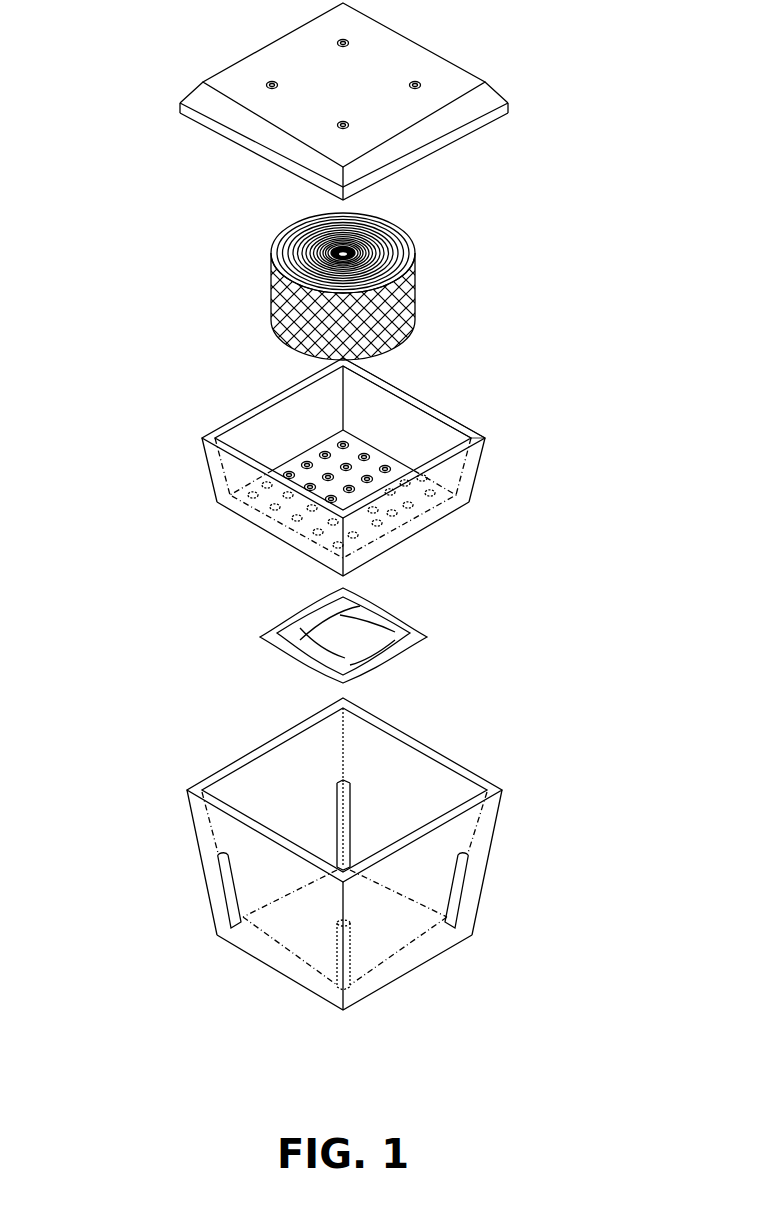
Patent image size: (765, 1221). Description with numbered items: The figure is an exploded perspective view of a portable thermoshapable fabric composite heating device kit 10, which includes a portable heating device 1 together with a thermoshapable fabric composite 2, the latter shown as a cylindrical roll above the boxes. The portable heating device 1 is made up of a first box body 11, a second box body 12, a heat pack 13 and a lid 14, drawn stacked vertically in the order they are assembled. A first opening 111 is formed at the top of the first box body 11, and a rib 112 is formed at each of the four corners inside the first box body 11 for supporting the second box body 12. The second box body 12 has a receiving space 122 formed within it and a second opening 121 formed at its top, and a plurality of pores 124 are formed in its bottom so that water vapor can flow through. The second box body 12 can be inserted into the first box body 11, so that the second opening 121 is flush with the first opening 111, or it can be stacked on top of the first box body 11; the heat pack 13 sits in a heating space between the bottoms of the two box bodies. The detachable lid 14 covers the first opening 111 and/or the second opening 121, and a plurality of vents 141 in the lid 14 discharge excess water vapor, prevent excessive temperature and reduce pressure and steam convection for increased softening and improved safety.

The portable thermoshapable fabric composite heating device kit 10 is at (565, 869).
The portable heating device 1 is at (212, 158).
The first box body 11 is at (218, 925).
The first opening 111 is at (232, 771).
The rib 112 is at (222, 873).
The second box body 12 is at (215, 497).
The second opening 121 is at (463, 434).
The receiving space 122 is at (402, 443).
The pores 124 is at (287, 470).
The heat pack 13 is at (268, 630).
The lid 14 is at (253, 53).
The vents 141 is at (266, 84).
The thermoshapable fabric composite 2 is at (415, 292).